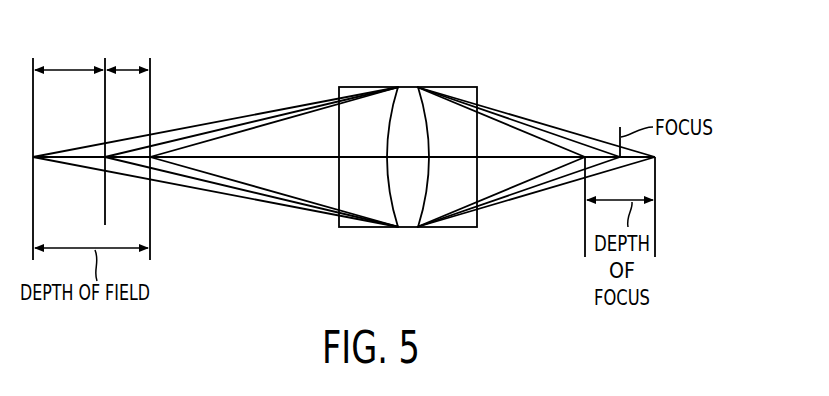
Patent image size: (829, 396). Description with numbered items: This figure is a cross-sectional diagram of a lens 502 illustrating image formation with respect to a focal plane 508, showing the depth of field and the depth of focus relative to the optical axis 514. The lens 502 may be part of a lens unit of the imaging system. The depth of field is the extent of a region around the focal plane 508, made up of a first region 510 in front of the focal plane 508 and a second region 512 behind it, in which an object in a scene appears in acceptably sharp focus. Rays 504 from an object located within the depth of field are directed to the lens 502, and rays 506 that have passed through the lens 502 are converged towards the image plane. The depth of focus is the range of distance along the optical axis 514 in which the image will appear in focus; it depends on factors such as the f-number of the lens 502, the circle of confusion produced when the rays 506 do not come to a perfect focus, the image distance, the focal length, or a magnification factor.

The lens 502 is at (412, 215).
The rays 504 is at (530, 100).
The rays 506 is at (262, 103).
The focal plane 508 is at (105, 110).
The first region 510 is at (128, 70).
The second region 512 is at (70, 70).
The optical axis 514 is at (297, 160).